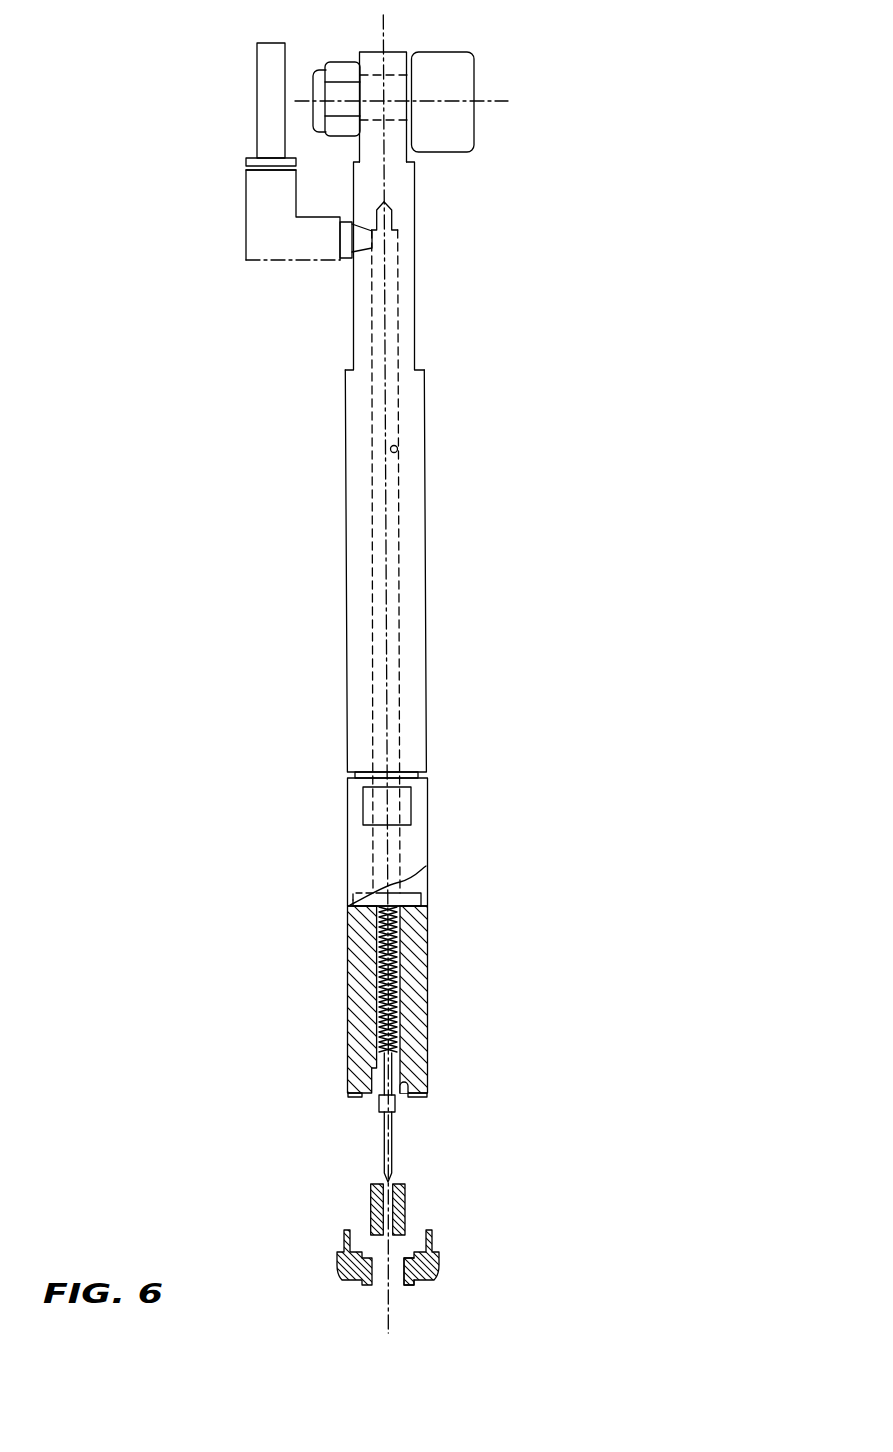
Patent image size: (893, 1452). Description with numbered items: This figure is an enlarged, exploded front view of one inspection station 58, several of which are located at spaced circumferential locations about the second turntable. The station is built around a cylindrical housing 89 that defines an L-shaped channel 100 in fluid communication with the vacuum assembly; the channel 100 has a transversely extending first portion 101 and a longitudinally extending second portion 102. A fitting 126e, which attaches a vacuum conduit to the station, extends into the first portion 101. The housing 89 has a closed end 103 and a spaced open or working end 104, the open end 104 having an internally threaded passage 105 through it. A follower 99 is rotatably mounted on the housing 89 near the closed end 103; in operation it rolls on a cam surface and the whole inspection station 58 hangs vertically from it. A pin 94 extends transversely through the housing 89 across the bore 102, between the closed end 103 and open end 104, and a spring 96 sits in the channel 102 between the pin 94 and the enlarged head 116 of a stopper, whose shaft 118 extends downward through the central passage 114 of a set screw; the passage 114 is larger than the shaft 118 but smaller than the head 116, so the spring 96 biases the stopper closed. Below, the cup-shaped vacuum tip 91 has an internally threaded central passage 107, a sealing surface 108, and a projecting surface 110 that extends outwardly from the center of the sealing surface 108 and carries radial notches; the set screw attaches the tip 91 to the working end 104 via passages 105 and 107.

The inspection station 58 is at (575, 418).
The housing 89 is at (426, 640).
The vacuum tip 91 is at (363, 1209).
The pin 94 is at (415, 901).
The spring 96 is at (395, 943).
The follower 99 is at (475, 72).
The channel 100 is at (397, 450).
The first portion 101 is at (371, 249).
The second portion 102 is at (399, 297).
The closed end 103 is at (400, 52).
The open end 104 is at (405, 1110).
The internally threaded passage 105 is at (410, 1100).
The central passage 107 is at (433, 1270).
The sealing surface 108 is at (348, 1280).
The projecting surface 110 is at (412, 1285).
The central passage 114 is at (402, 1220).
The enlarged head 116 is at (370, 1096).
The shaft 118 is at (381, 1114).
The fitting 126e is at (245, 193).